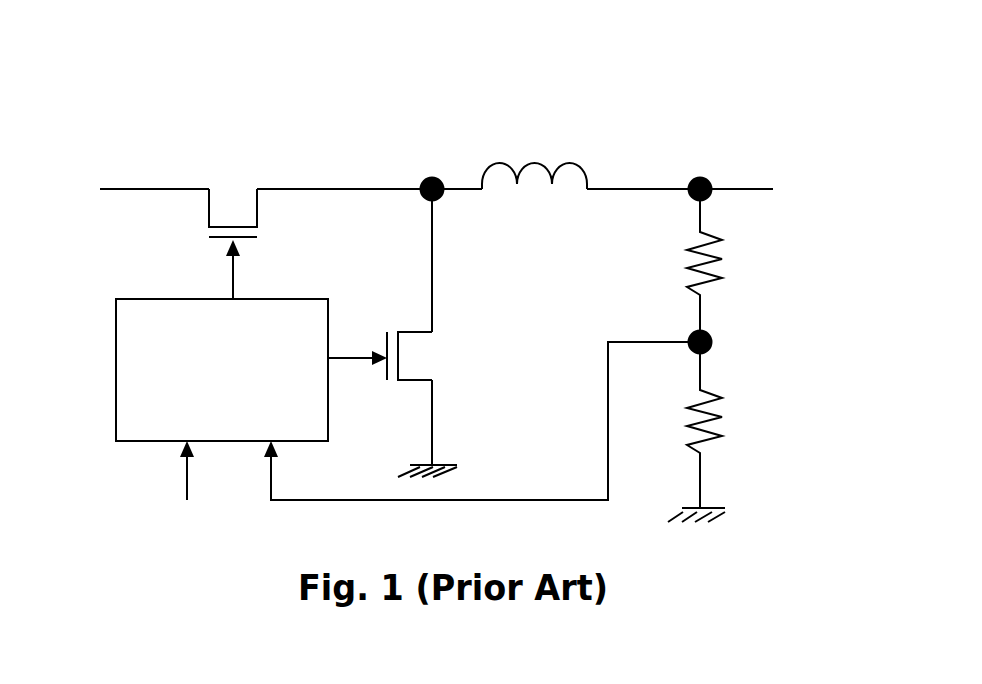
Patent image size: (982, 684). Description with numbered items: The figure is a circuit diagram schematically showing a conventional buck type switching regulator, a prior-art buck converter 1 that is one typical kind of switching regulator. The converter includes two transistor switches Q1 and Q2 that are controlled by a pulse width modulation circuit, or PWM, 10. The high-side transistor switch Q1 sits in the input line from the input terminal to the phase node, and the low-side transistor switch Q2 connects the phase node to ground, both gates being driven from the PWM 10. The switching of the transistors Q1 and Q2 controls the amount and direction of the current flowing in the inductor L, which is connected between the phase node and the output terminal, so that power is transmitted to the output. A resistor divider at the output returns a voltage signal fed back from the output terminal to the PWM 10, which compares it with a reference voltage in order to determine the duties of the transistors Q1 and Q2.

The buck converter circuit (prior art) 1 is at (680, 100).
The pulse width modulation circuit 10 is at (241, 410).
The transistor switch Q1 is at (233, 195).
The transistor switch Q2 is at (430, 356).
The inductor L is at (534, 150).